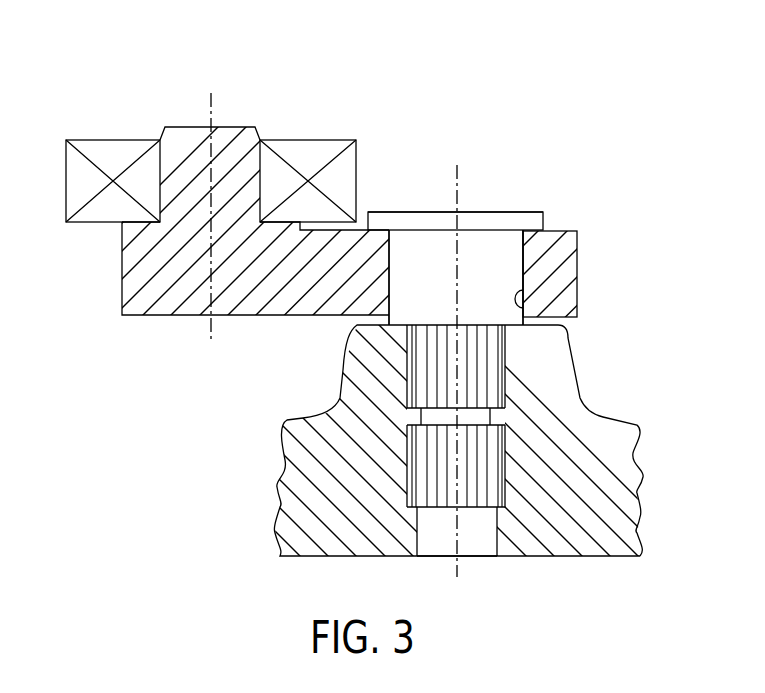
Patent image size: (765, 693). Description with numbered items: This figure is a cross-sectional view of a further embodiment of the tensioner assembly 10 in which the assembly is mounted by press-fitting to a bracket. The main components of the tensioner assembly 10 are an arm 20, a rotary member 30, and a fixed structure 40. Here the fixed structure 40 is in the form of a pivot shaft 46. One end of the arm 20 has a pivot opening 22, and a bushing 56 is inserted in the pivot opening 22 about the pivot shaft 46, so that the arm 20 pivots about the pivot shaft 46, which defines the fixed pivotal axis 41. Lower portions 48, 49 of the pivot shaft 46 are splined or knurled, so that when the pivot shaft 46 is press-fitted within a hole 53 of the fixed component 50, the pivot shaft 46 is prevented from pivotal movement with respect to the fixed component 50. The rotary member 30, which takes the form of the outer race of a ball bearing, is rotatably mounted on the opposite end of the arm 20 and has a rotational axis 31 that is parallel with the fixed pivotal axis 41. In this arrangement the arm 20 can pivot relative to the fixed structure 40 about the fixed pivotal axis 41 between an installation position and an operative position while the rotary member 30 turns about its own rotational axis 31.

The tensioner assembly 10 is at (531, 98).
The arm 20 is at (152, 318).
The pivot opening 22 is at (523, 307).
The rotary member 30 is at (352, 133).
The rotational axis 31 is at (212, 107).
The fixed structure 40 is at (492, 210).
The fixed pivotal axis 41 is at (457, 177).
The pivot shaft 46 is at (535, 212).
The lower portion of the pivot shaft 48 is at (486, 369).
The lower portion of the pivot shaft 49 is at (473, 466).
The fixed component 50 is at (600, 522).
The hole 53 is at (497, 535).
The bushing 56 is at (490, 270).